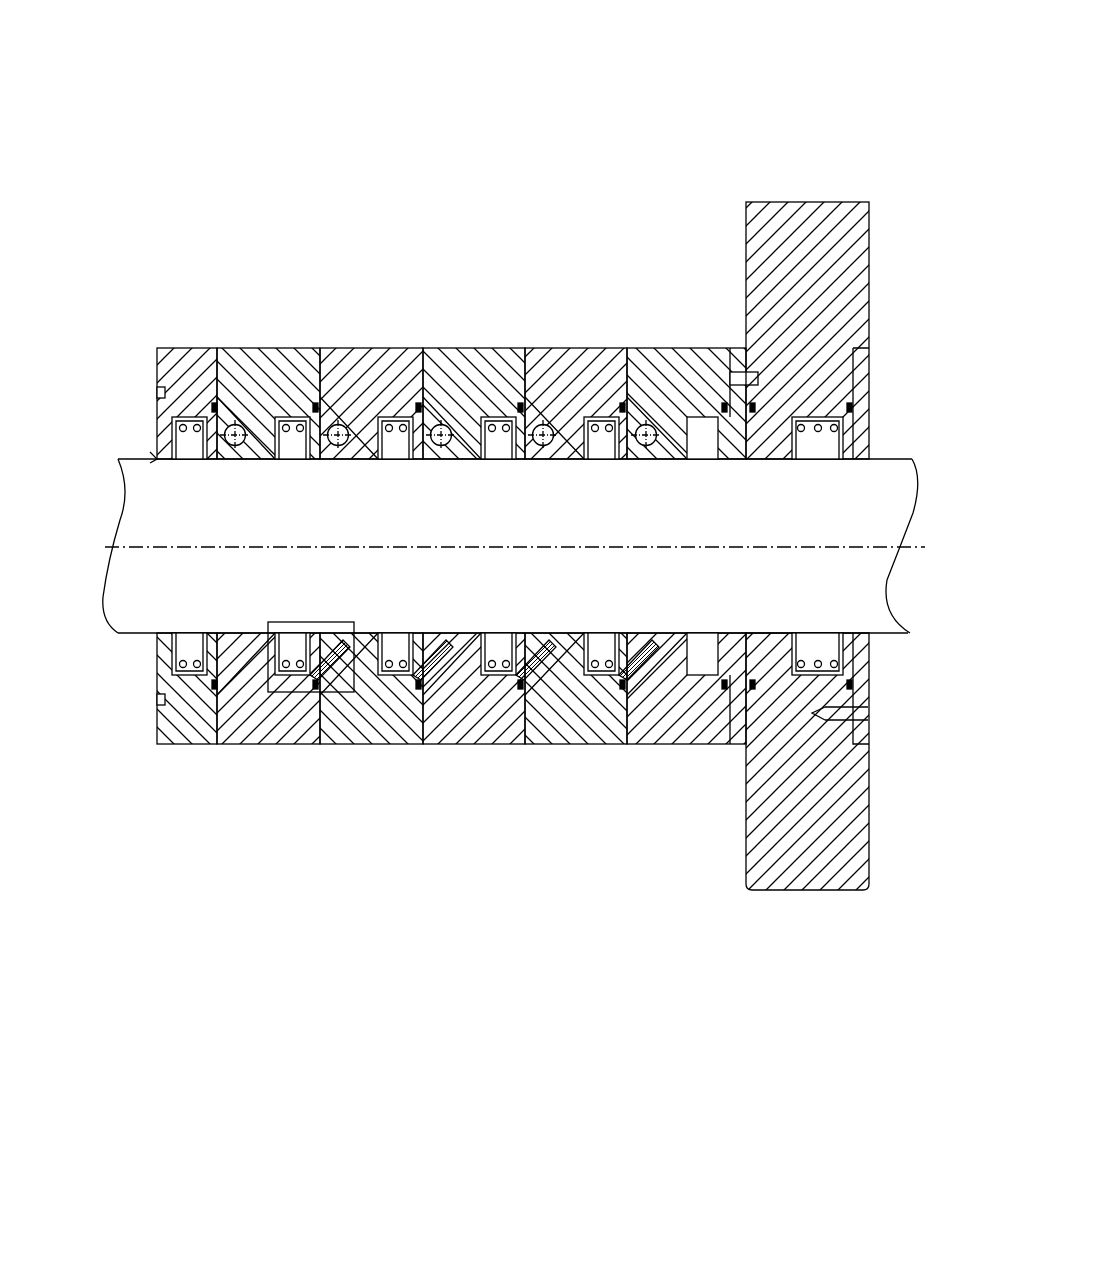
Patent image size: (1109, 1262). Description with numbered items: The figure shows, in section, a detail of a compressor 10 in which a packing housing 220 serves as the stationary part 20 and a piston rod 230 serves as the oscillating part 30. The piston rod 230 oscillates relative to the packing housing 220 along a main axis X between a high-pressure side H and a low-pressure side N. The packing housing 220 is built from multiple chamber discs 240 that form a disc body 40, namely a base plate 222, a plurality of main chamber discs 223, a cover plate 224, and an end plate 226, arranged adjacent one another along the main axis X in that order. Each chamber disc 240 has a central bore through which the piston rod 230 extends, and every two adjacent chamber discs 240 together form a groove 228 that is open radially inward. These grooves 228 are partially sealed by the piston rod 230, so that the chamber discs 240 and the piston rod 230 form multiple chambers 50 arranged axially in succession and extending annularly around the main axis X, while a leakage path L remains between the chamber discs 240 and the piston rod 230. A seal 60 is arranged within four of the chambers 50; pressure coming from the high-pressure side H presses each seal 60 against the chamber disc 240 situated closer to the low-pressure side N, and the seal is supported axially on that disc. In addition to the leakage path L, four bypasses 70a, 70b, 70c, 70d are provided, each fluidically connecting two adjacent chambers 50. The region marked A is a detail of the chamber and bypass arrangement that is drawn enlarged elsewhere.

The compressor 10 is at (620, 145).
The stationary part 20 is at (781, 846).
The packing housing 220 is at (781, 846).
The oscillating part 30 is at (485, 612).
The piston rod 230 is at (137, 613).
The disc body 40 is at (495, 530).
The base plate 222 is at (158, 356).
The main chamber discs 223 is at (300, 410).
The cover plate 224 is at (737, 353).
The end plate 226 is at (825, 830).
The chamber discs 240 is at (495, 530).
The chambers 50 is at (273, 417).
The seal 60 is at (270, 360).
The groove 228 is at (283, 675).
The bypass 70a is at (338, 686).
The bypass 70b is at (442, 670).
The bypass 70c is at (543, 667).
The bypass 70d is at (643, 663).
The detail region A is at (277, 692).
The leakage path L is at (150, 453).
The high-pressure side H is at (79, 535).
The low-pressure side N is at (961, 525).
The main axis X is at (907, 548).